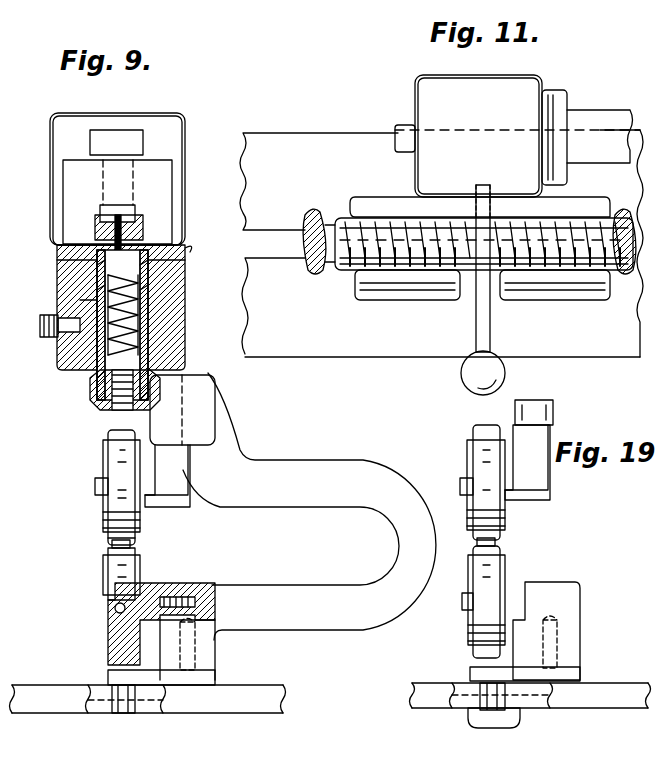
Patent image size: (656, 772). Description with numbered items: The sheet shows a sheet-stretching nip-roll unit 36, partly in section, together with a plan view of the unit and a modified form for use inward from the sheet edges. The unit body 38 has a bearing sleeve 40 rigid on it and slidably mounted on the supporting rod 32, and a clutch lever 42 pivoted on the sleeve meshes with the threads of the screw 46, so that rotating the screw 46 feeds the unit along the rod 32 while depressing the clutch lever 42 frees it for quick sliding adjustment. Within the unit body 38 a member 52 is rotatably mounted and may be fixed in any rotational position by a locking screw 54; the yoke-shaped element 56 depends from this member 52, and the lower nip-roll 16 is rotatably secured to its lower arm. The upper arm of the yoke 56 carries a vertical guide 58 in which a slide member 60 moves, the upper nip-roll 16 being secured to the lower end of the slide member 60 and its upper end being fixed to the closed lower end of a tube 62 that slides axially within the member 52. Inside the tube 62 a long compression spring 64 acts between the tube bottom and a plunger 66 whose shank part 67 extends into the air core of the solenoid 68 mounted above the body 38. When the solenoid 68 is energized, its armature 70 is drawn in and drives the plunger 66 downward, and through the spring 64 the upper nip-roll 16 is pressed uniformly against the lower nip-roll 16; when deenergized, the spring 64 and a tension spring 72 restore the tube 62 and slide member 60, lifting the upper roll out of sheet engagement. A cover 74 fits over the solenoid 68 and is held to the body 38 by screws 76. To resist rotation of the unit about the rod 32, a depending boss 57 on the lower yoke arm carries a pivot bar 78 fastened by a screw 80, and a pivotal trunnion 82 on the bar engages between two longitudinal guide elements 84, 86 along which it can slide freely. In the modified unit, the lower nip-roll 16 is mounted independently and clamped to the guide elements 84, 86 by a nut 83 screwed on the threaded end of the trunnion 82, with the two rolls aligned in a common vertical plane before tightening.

In FIG. 9, the cover 74 is at (50, 128).
In FIG. 11, the cover 74 is at (522, 90).
In FIG. 9, the solenoid 68 is at (160, 180).
In FIG. 9, the armature 70 is at (118, 208).
In FIG. 9, the shank part 67 is at (140, 230).
In FIG. 9, the screws 76 is at (186, 252).
In FIG. 9, the plunger 66 is at (62, 275).
In FIG. 9, the compression spring 64 is at (180, 278).
In FIG. 9, the unit body 38 is at (70, 294).
In FIG. 9, the tube 62 is at (150, 300).
In FIG. 9, the member 52 is at (90, 304).
In FIG. 9, the locking screw 54 is at (45, 320).
In FIG. 9, the tension spring 72 is at (150, 356).
In FIG. 9, the nip-roll unit 36 is at (86, 398).
In FIG. 9, the vertical guide 58 is at (175, 420).
In FIG. 9, the yoke-shaped element 56 is at (305, 467).
In FIG. 11, the yoke-shaped element 56 is at (592, 118).
In FIG. 9, the slide member 60 is at (178, 495).
In FIG. 19, the slide member 60 is at (548, 492).
In FIG. 9, the nip-roll 16 is at (110, 565).
In FIG. 19, the nip-roll 16 is at (497, 565).
In FIG. 9, the depending boss 57 is at (215, 652).
In FIG. 19, the depending boss 57 is at (580, 640).
In FIG. 9, the screw 80 is at (196, 662).
In FIG. 19, the screw 80 is at (560, 655).
In FIG. 9, the pivot bar 78 is at (110, 678).
In FIG. 19, the pivot bar 78 is at (476, 677).
In FIG. 9, the guide element 84 is at (30, 695).
In FIG. 11, the guide element 84 is at (272, 140).
In FIG. 19, the guide element 84 is at (427, 700).
In FIG. 9, the guide element 86 is at (95, 706).
In FIG. 11, the guide element 86 is at (300, 350).
In FIG. 19, the guide element 86 is at (535, 700).
In FIG. 9, the pivotal trunnion 82 is at (125, 702).
In FIG. 19, the pivotal trunnion 82 is at (490, 695).
In FIG. 19, the nut 83 is at (500, 722).
In FIG. 11, the screw 46 is at (378, 222).
In FIG. 11, the rod 32 is at (318, 213).
In FIG. 11, the bearing sleeve 40 is at (556, 288).
In FIG. 11, the clutch lever 42 is at (472, 320).